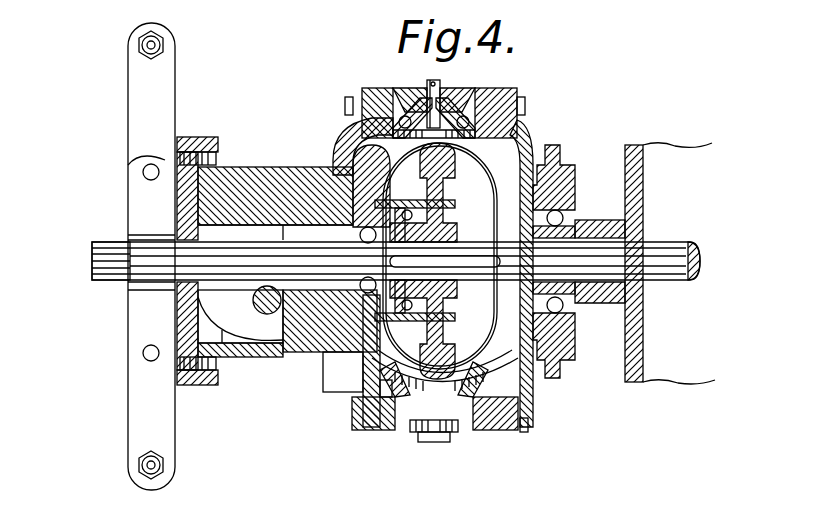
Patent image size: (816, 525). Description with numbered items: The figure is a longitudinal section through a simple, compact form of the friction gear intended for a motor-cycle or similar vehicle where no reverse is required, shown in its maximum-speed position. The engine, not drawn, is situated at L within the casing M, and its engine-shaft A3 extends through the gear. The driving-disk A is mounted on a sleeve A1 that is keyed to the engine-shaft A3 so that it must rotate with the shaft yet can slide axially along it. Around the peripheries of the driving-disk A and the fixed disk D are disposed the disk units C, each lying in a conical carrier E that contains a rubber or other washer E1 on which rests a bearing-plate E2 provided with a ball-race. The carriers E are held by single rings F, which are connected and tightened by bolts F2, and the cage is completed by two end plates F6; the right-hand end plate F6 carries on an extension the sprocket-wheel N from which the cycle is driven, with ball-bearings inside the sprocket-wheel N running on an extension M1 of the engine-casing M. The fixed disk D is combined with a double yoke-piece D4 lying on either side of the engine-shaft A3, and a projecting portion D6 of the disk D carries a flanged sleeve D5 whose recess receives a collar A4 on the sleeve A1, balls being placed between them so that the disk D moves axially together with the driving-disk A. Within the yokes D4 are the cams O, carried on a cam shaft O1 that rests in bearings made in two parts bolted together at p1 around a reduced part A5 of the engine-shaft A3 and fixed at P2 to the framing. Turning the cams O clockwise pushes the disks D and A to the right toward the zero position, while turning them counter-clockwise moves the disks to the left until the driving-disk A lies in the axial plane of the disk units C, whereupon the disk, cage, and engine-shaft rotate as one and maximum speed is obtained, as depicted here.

The fixing of bearings to framing P2 is at (158, 85).
The bolting point of bearings p1 is at (148, 174).
The cams O is at (223, 330).
The cam shaft O1 is at (108, 258).
The reduced part of shaft A5 is at (150, 270).
The fixed disk D is at (335, 150).
The double yoke-piece D4 is at (220, 155).
The projecting portion of disk D D6 is at (333, 380).
The floating ring F is at (482, 108).
The end plate F6 is at (353, 112).
The bearing-plate E2 is at (326, 109).
The disk unit C is at (522, 118).
The conical carrier E is at (405, 105).
The washer E1 is at (492, 116).
The bolts F2 is at (525, 108).
The sleeve A1 is at (413, 385).
The driving-disk A is at (527, 265).
The collar A4 is at (360, 420).
The flanged sleeve D5 is at (388, 385).
The engine-shaft A3 is at (527, 423).
The sprocket-wheel N is at (572, 176).
The extension of engine-casing M1 is at (638, 221).
The engine-casing M is at (645, 190).
The engine location L is at (679, 263).